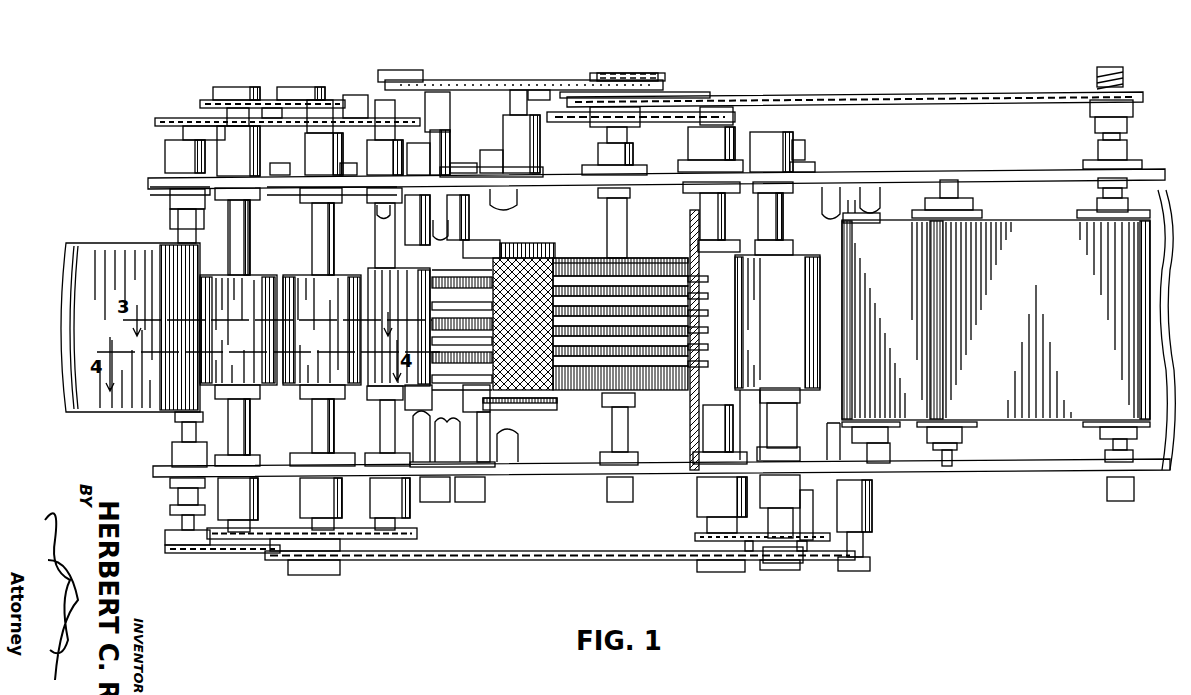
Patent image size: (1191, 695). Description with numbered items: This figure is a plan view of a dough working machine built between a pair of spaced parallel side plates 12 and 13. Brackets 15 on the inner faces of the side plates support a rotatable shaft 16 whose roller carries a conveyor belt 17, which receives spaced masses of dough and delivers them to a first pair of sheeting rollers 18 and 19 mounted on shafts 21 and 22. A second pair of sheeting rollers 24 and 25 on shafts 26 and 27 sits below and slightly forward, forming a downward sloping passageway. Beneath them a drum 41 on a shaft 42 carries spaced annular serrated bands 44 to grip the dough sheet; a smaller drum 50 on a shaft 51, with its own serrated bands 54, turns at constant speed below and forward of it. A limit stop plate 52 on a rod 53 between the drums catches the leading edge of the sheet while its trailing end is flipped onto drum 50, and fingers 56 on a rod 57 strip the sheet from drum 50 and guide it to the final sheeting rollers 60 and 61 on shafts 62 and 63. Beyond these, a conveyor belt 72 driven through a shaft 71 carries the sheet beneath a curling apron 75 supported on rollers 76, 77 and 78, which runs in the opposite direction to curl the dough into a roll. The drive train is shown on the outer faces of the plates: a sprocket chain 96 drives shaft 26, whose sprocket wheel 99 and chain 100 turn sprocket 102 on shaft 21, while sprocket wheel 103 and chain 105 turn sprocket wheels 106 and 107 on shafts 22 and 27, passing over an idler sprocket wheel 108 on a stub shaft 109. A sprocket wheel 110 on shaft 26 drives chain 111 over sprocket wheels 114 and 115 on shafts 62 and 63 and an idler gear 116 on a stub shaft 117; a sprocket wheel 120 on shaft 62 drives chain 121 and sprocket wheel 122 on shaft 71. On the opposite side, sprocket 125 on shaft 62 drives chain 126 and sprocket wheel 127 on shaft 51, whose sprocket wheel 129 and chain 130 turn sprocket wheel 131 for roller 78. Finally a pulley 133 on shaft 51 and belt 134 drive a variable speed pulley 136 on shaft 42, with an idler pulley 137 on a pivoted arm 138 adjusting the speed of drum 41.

The side plate 12 is at (937, 468).
The side plate 13 is at (905, 173).
The bracket 15 is at (168, 212).
The rotatable shaft 16 is at (180, 432).
The conveyor belt 17 is at (80, 243).
The sheeting roller 18 is at (246, 311).
The sheeting roller 19 is at (326, 311).
The shaft 21 is at (232, 412).
The shaft 22 is at (312, 425).
The sheeting roller 24 is at (378, 210).
The sheeting roller 25 is at (397, 292).
The shaft 26 is at (286, 238).
The shaft 27 is at (378, 410).
The drum 41 is at (460, 290).
The shaft 42 is at (432, 477).
The annular serrated bands 44 is at (478, 365).
The drum 50 is at (567, 395).
The shaft 51 is at (612, 430).
The limit stop plate 52 is at (545, 250).
The rod 53 is at (470, 470).
The serrated bands 54 is at (622, 280).
The fingers 56 is at (698, 372).
The rod 57 is at (690, 440).
The sheeting roller 60 is at (713, 308).
The sheeting roller 61 is at (787, 351).
The shaft 62 is at (705, 435).
The shaft 63 is at (797, 422).
The shaft 71 is at (803, 525).
The conveyor belt 72 is at (1175, 468).
The curling apron 75 is at (1008, 330).
The roller 76 is at (880, 215).
The roller 77 is at (960, 208).
The roller 78 is at (1095, 208).
The sprocket chain 96 is at (418, 535).
The sprocket wheel 99 is at (295, 87).
The sprocket chain 100 is at (266, 100).
The sprocket 102 is at (222, 87).
The sprocket wheel 103 is at (277, 100).
The sprocket chain 105 is at (160, 118).
The sprocket wheel 106 is at (350, 95).
The sprocket wheel 107 is at (380, 74).
The idler sprocket wheel 108 is at (190, 128).
The stub shaft 109 is at (188, 134).
The sprocket wheel 110 is at (285, 576).
The sprocket chain 111 is at (568, 562).
The sprocket wheel 114 is at (722, 573).
The sprocket wheel 115 is at (798, 570).
The idler gear 116 is at (868, 572).
The stub shaft 117 is at (868, 540).
The sprocket wheel 120 is at (695, 537).
The sprocket chain 121 is at (750, 553).
The sprocket wheel 122 is at (822, 552).
The sprocket 125 is at (728, 107).
The sprocket chain 126 is at (668, 112).
The sprocket wheel 127 is at (583, 130).
The sprocket wheel 129 is at (570, 98).
The sprocket chain 130 is at (838, 95).
The sprocket wheel 131 is at (1128, 93).
The pulley 133 is at (648, 73).
The belt 134 is at (455, 80).
The variable speed pulley 136 is at (437, 95).
The idler pulley 137 is at (538, 90).
The arm 138 is at (505, 148).